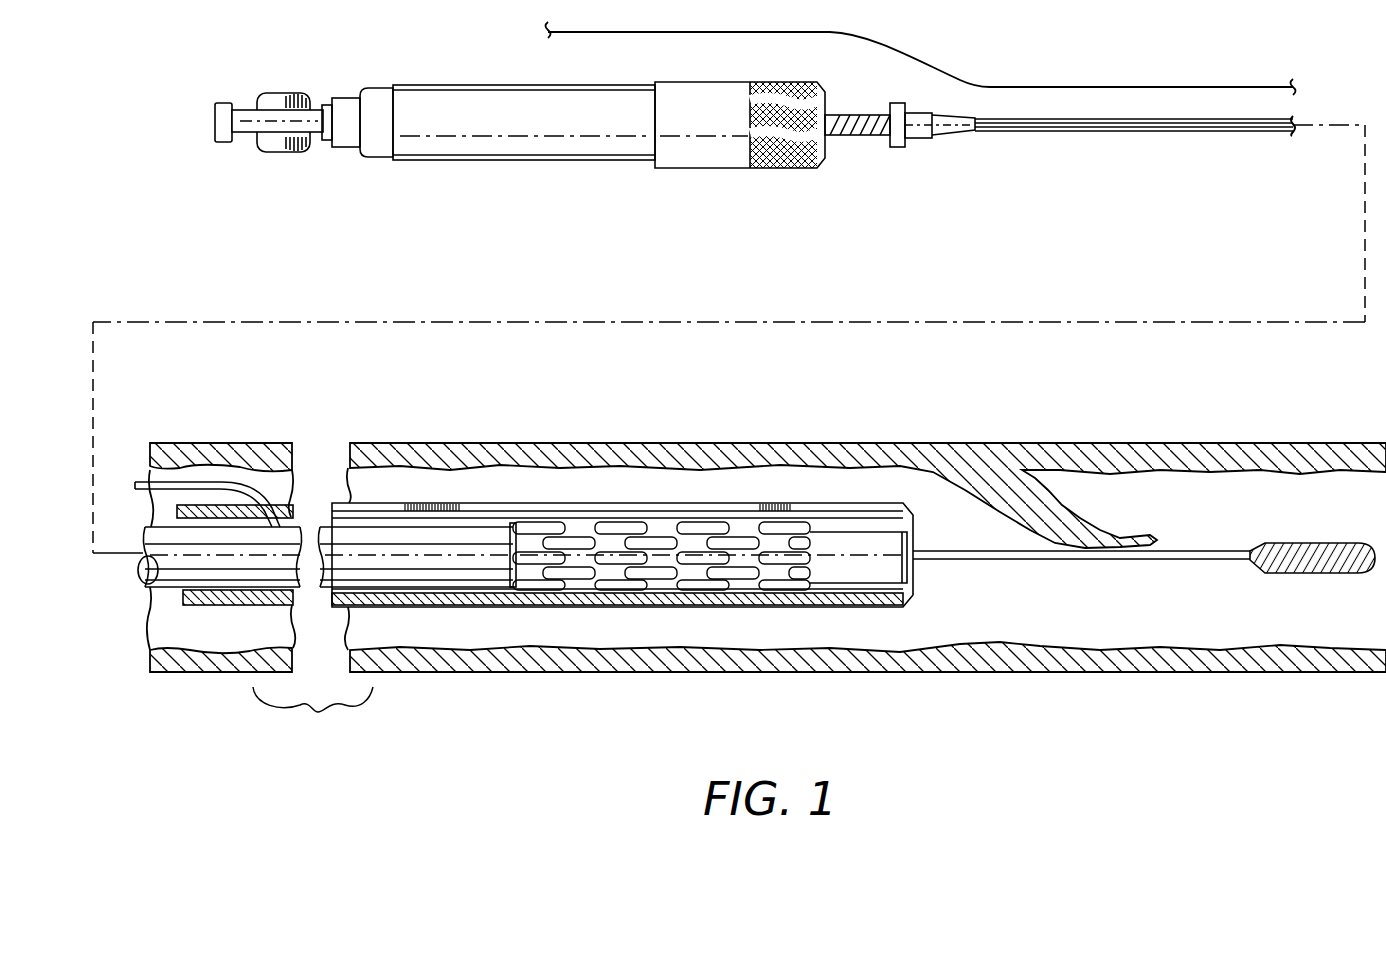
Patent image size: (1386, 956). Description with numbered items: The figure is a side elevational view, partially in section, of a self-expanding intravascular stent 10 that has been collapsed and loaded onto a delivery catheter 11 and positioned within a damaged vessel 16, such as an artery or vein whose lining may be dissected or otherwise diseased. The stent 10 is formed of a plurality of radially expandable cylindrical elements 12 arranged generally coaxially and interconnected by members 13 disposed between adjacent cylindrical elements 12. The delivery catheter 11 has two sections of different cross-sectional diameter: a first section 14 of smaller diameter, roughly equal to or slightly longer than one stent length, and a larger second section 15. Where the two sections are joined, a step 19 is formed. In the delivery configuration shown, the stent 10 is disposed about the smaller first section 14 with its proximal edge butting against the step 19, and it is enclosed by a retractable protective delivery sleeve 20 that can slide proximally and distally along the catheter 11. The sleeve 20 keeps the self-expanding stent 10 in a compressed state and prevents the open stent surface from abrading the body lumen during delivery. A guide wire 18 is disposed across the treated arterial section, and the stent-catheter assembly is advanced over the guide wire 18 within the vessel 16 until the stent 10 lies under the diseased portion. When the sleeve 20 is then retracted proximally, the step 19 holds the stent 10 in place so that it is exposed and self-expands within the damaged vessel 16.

The intravascular stent 10 is at (540, 530).
The delivery catheter 11 is at (1127, 132).
The radially expandable cylindrical elements 12 is at (688, 528).
The interconnecting members 13 is at (586, 532).
The catheter first section 14 is at (546, 558).
The catheter second section 15 is at (447, 547).
The damaged vessel 16 is at (1088, 652).
The guide wire 18 is at (1213, 547).
The step 19 is at (556, 532).
The retractable protective delivery sleeve 20 is at (820, 607).